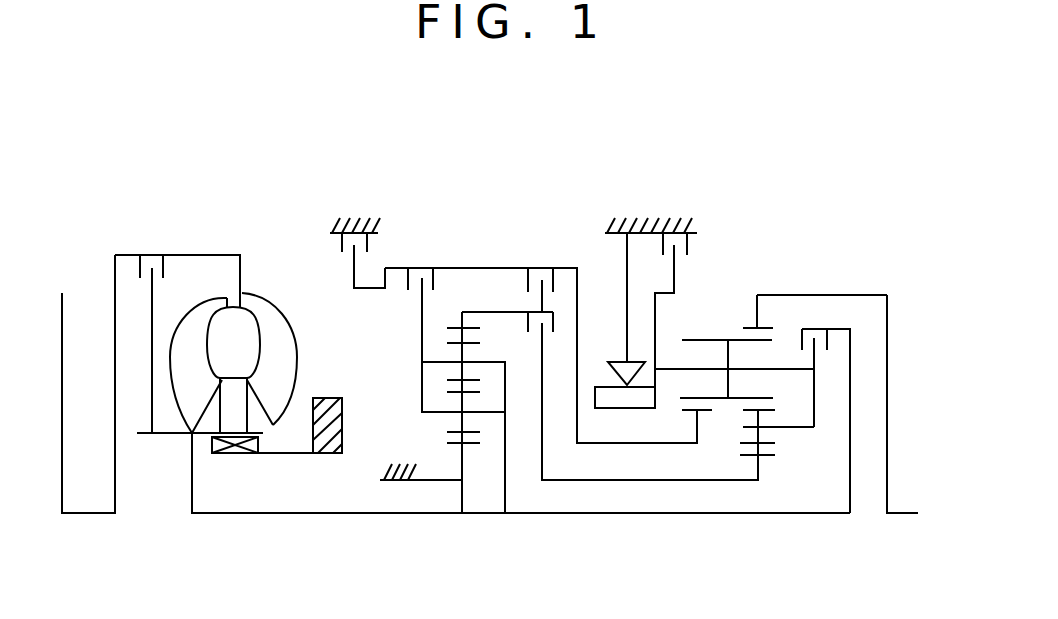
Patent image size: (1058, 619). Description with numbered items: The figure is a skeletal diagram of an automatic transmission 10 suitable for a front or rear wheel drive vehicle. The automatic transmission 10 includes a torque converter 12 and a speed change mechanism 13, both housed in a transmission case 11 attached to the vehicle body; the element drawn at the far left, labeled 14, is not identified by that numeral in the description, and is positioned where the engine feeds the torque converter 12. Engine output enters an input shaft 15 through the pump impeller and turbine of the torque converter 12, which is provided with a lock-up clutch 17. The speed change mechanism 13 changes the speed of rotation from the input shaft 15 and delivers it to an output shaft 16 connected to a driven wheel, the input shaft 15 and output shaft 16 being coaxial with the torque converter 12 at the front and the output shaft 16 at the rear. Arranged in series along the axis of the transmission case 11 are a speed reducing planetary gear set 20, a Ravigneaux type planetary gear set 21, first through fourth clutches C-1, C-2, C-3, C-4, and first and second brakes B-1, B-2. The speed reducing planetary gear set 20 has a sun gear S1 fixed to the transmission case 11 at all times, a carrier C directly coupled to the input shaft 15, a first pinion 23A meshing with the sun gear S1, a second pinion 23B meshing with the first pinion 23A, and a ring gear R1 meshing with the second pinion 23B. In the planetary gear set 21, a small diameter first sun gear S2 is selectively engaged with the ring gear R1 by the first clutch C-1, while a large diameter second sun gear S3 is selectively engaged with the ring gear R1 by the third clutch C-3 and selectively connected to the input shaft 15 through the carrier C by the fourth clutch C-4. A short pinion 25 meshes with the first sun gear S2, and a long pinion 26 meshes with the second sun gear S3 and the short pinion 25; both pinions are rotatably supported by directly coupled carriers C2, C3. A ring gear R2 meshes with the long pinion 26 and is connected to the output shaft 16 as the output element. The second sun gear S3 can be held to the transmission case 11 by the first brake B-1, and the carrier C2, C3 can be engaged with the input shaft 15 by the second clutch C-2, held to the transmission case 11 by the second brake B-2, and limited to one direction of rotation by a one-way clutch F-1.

The automatic transmission 10 is at (472, 190).
The transmission case 11 is at (638, 218).
The torque converter 12 is at (262, 272).
The speed change mechanism 13 is at (740, 218).
The engine 14 is at (87, 513).
The input shaft 15 is at (353, 513).
The output shaft 16 is at (905, 513).
The lock-up clutch 17 is at (148, 245).
The speed reducing planetary gear set 20 is at (400, 350).
The planetary gear set 21 is at (733, 300).
The first pinion 23A is at (458, 423).
The second pinion 23B is at (457, 372).
The short pinion 25 is at (760, 433).
The long pinion 26 is at (705, 337).
The carrier C is at (422, 397).
The first clutch C-1 is at (610, 382).
The second clutch C-2 is at (826, 406).
The third clutch C-3 is at (540, 275).
The fourth clutch C-4 is at (410, 300).
The first brake B-1 is at (357, 237).
The second brake B-2 is at (651, 287).
The one-way clutch F-1 is at (625, 401).
The ring gear R1 is at (450, 327).
The ring gear R2 is at (770, 325).
The sun gear S1 is at (472, 445).
The first sun gear S2 is at (768, 457).
The second sun gear S3 is at (712, 408).
The carrier C2 is at (815, 410).
The carrier C3 is at (815, 380).